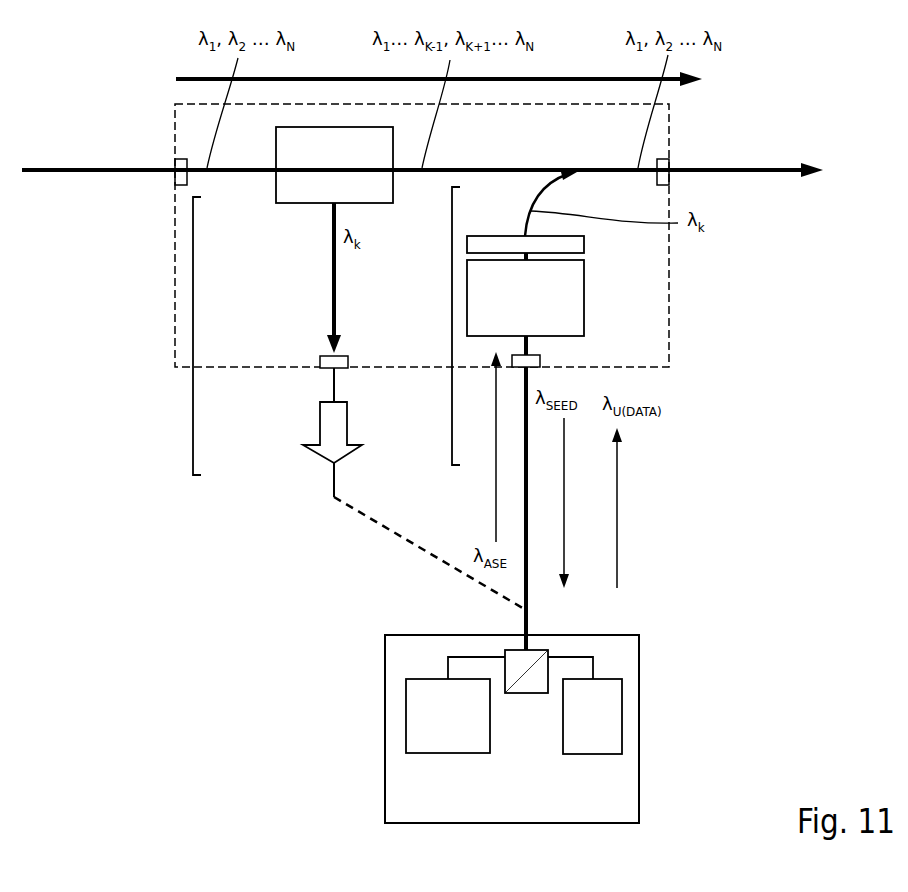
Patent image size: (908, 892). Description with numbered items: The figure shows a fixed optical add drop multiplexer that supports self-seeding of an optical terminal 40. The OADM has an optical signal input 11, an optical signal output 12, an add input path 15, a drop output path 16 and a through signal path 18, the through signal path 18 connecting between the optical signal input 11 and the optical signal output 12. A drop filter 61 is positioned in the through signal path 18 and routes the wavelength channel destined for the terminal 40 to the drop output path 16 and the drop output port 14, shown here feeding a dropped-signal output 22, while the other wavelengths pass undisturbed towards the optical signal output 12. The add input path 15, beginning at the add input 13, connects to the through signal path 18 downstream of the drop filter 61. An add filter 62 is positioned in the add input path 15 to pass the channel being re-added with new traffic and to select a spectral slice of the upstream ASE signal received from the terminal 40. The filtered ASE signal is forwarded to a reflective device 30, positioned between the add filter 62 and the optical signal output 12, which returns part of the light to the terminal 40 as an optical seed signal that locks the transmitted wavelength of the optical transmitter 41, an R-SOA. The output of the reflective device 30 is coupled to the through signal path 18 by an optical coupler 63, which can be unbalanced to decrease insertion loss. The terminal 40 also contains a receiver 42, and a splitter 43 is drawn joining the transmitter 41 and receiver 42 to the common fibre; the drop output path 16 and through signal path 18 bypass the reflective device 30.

The optical signal input 11 is at (174, 168).
The optical signal output 12 is at (670, 168).
The add input 13 is at (540, 363).
The drop output 14 is at (316, 368).
The add input path 15 is at (452, 325).
The drop output path 16 is at (193, 335).
The through signal path 18 is at (341, 78).
The dropped wavelength output 22 is at (318, 420).
The reflective device 30 is at (584, 245).
The optical terminal 40 is at (385, 672).
The optical transmitter 41 is at (406, 730).
The receiver 42 is at (622, 718).
The optical splitter/coupler 43 is at (533, 650).
The drop filter 61 is at (276, 193).
The add filter 62 is at (584, 302).
The optical coupler 63 is at (563, 172).